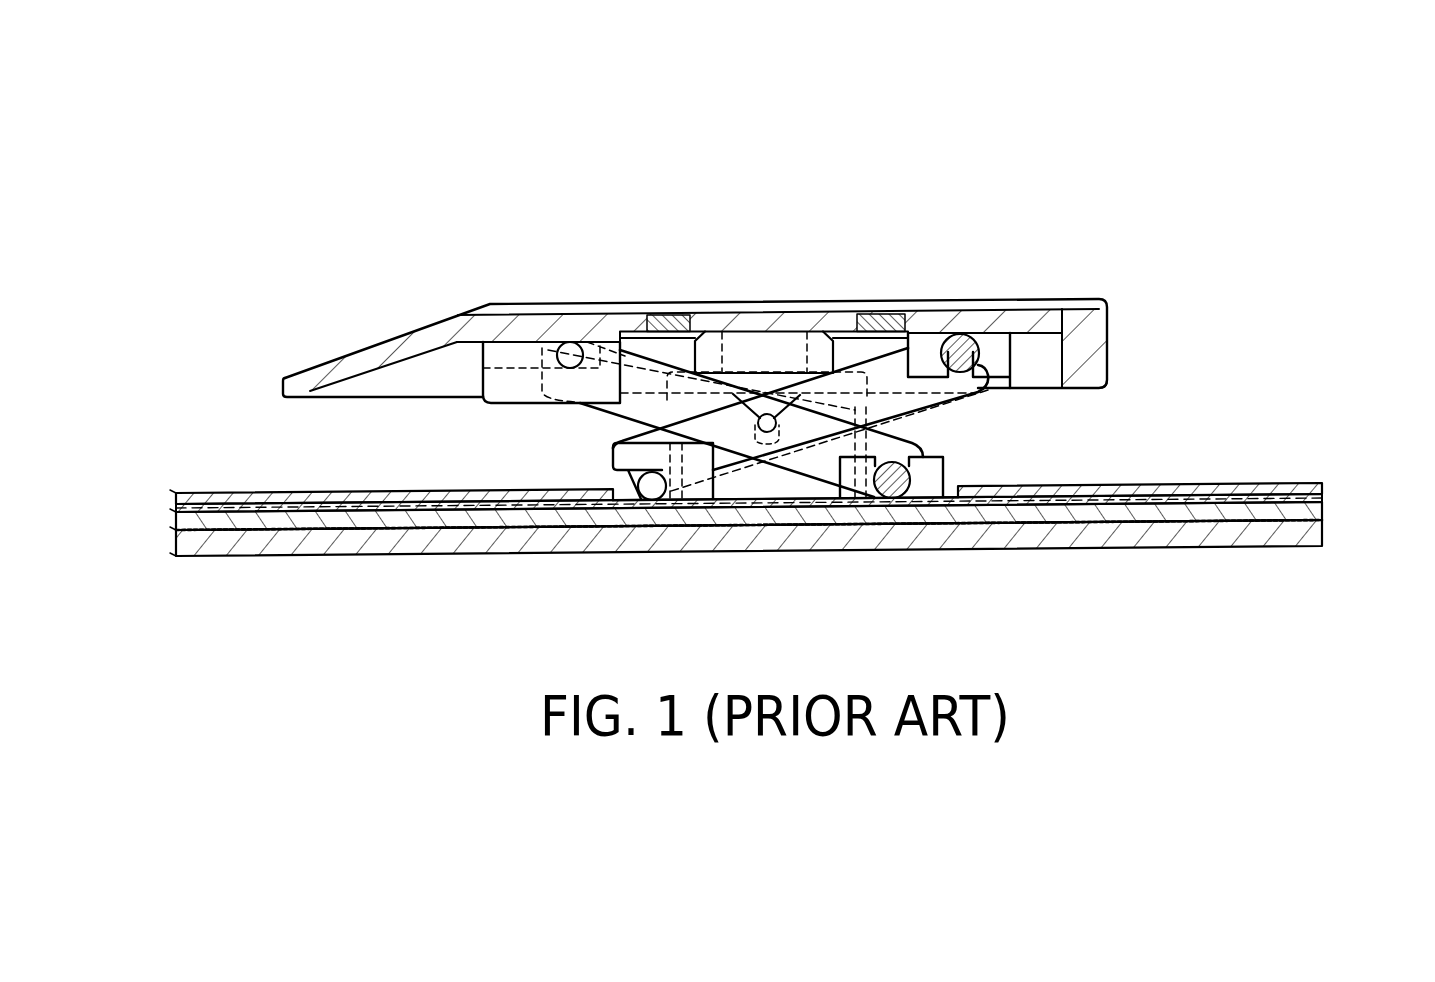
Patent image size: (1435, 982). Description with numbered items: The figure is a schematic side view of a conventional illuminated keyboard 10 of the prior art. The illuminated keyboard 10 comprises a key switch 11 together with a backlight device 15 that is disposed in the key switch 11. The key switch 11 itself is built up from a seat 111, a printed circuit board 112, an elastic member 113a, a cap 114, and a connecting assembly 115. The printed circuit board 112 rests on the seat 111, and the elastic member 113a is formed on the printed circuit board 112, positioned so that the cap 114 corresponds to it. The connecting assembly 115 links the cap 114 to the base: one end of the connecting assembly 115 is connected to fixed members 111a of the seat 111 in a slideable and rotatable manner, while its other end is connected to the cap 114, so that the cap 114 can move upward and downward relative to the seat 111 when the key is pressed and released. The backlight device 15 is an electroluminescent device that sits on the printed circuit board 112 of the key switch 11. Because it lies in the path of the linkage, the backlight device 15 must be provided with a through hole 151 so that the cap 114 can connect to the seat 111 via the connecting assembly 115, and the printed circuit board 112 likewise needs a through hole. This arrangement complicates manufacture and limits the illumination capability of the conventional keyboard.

The illuminated keyboard 10 is at (160, 72).
The key switch 11 is at (1050, 302).
The cap 114 is at (1108, 352).
The connecting assembly 115 is at (623, 443).
The elastic member 113a is at (957, 385).
The through hole 151 is at (956, 488).
The backlight device 15 is at (1236, 484).
The printed circuit board 112 is at (1323, 503).
The seat 111 is at (1305, 538).
The fixed members 111a is at (927, 487).